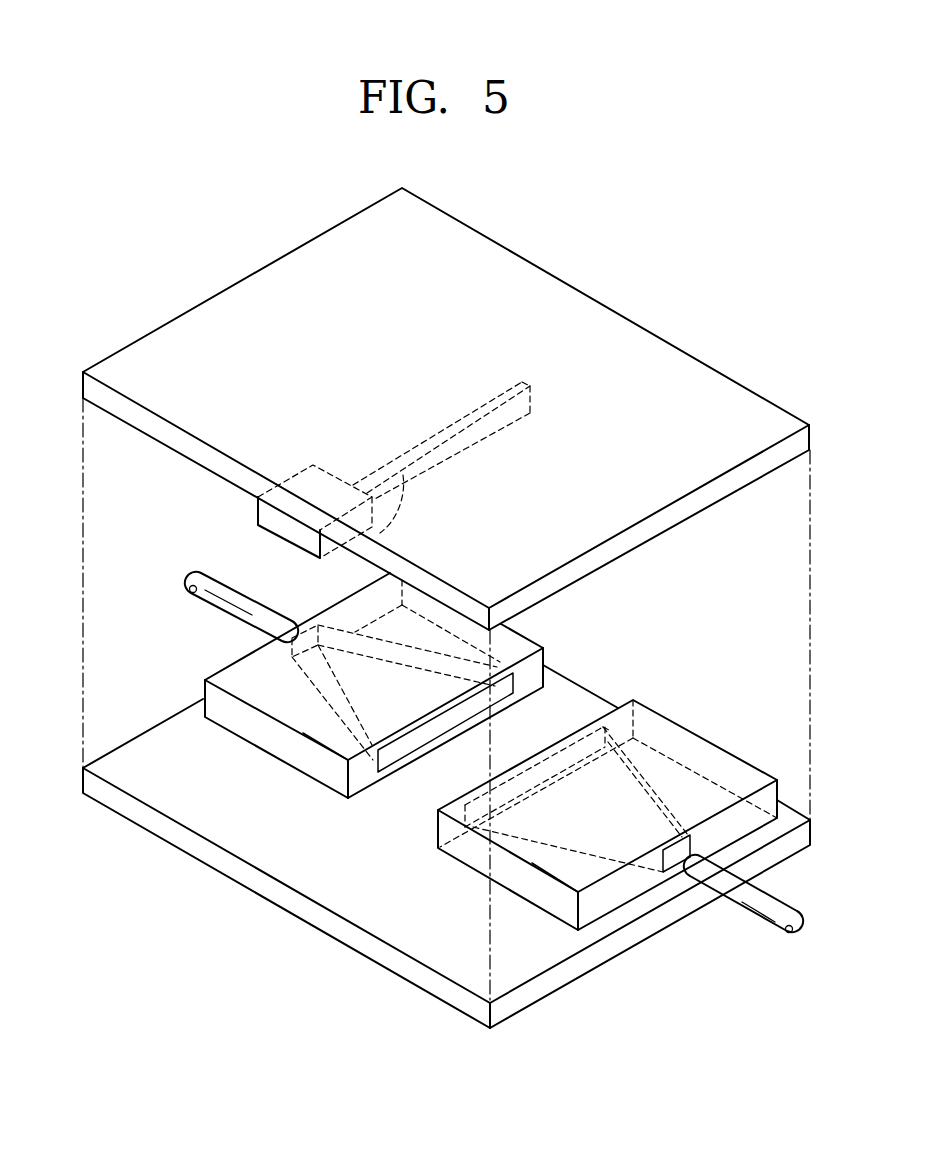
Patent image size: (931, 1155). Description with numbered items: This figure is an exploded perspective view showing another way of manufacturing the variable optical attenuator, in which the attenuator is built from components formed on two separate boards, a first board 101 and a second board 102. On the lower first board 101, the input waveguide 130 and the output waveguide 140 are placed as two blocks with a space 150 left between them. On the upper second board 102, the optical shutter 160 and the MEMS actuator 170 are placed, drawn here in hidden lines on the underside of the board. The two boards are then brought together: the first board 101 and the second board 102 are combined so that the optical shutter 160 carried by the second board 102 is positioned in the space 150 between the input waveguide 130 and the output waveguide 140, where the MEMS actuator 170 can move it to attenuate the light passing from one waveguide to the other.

The first board 101 is at (163, 758).
The second board 102 is at (180, 350).
The input waveguide 130 is at (278, 712).
The output waveguide 140 is at (540, 823).
The space 150 is at (552, 721).
The optical shutter 160 is at (352, 548).
The MEMS actuator 170 is at (265, 513).